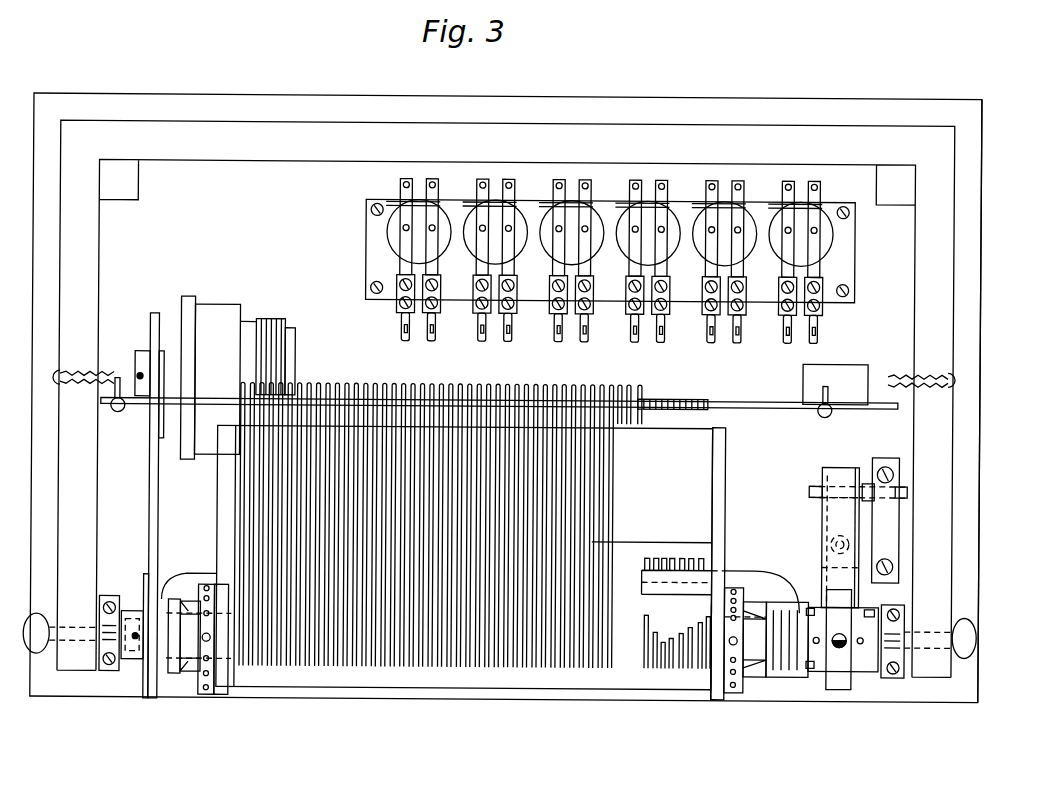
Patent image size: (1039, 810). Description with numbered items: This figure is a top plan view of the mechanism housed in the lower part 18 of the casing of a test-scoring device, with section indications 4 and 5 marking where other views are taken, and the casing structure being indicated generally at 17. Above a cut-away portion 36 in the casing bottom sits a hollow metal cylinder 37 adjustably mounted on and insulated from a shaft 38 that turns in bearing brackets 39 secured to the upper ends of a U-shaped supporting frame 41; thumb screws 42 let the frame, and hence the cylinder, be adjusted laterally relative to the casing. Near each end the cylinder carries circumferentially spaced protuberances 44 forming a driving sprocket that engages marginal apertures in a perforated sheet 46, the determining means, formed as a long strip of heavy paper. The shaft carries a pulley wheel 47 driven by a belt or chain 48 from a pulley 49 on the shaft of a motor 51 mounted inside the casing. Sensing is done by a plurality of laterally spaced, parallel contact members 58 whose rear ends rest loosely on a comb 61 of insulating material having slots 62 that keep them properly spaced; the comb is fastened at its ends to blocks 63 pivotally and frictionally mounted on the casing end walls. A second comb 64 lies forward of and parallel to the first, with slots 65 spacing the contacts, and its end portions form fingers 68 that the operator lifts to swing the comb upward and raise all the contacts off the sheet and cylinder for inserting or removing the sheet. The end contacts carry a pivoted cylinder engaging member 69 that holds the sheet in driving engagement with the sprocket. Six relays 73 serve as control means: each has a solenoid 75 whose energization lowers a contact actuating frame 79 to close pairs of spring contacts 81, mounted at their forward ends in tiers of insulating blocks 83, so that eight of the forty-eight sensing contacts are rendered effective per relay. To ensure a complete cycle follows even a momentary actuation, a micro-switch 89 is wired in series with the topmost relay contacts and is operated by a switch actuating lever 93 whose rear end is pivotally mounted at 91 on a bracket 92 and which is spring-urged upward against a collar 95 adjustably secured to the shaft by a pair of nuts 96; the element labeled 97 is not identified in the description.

The section line 4- 4 is at (690, 745).
The section line 5- 5 is at (850, 722).
The housing frame 17 is at (540, 94).
The lower part of the casing 18 is at (982, 326).
The cut-away portion 36 is at (771, 573).
The hollow metal cylinder 37 is at (203, 690).
The shaft 38 is at (163, 697).
The bearing brackets 39 is at (115, 593).
The U-shaped supporting frame 41 is at (756, 688).
The thumb screws 42 is at (47, 620).
The protuberances 44 is at (210, 695).
The perforated sheet 46 is at (365, 690).
The pulley wheel 47 is at (172, 578).
The belt or chain 48 is at (152, 480).
The pulley 49 is at (153, 313).
The motor 51 is at (228, 308).
The contact members 58 is at (601, 383).
The comb 61 is at (754, 397).
The slots 62 is at (648, 395).
The blocks 63 is at (113, 370).
The second comb 64 is at (705, 520).
The slots 65 is at (657, 560).
The fingers 68 is at (234, 695).
The cylinder engaging member 69 is at (242, 672).
The relays 73 is at (392, 257).
The solenoid 75 is at (388, 234).
The contact actuating frame 79 is at (400, 200).
The spring contacts 81 is at (403, 190).
The blocks of insulating material 83 is at (398, 298).
The micro-switch 89 is at (830, 517).
The pivot 91 is at (818, 482).
The bracket 92 is at (892, 521).
The switch actuating lever 93 is at (830, 566).
The collar 95 is at (843, 690).
The nuts 96 is at (873, 610).
The pivot 97 is at (843, 628).